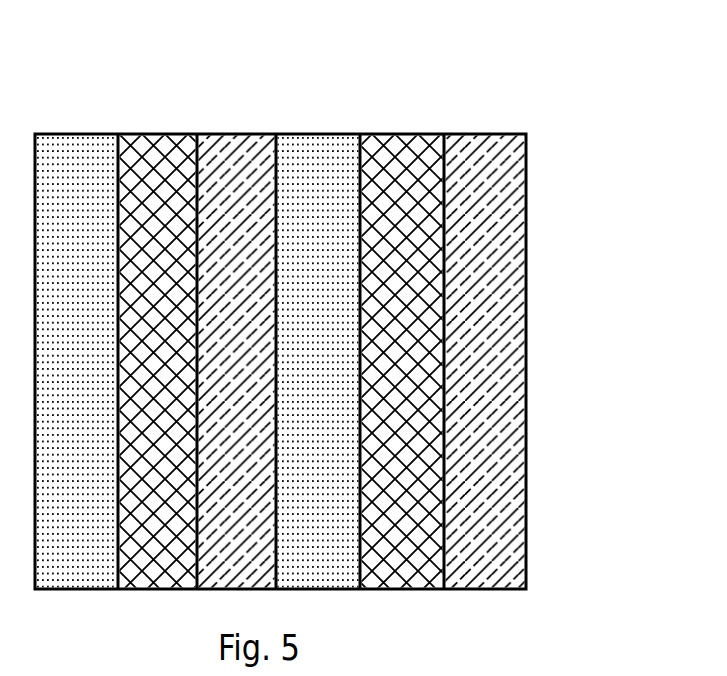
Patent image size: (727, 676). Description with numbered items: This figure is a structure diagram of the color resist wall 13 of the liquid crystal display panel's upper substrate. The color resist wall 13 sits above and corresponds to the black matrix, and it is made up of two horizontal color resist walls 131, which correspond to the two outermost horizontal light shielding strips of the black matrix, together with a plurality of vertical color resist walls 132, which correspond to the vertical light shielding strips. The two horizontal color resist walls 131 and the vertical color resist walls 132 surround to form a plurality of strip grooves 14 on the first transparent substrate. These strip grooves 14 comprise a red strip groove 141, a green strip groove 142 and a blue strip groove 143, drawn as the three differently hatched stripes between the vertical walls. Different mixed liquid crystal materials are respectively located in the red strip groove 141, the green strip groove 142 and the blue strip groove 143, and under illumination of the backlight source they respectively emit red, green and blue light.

The color resist wall 13 is at (332, 294).
The horizontal color resist walls 131 is at (393, 133).
The vertical color resist walls 132 is at (447, 230).
The strip grooves 14 is at (163, 294).
The red strip groove 141 is at (73, 180).
The green strip groove 142 is at (150, 183).
The blue strip groove 143 is at (241, 321).